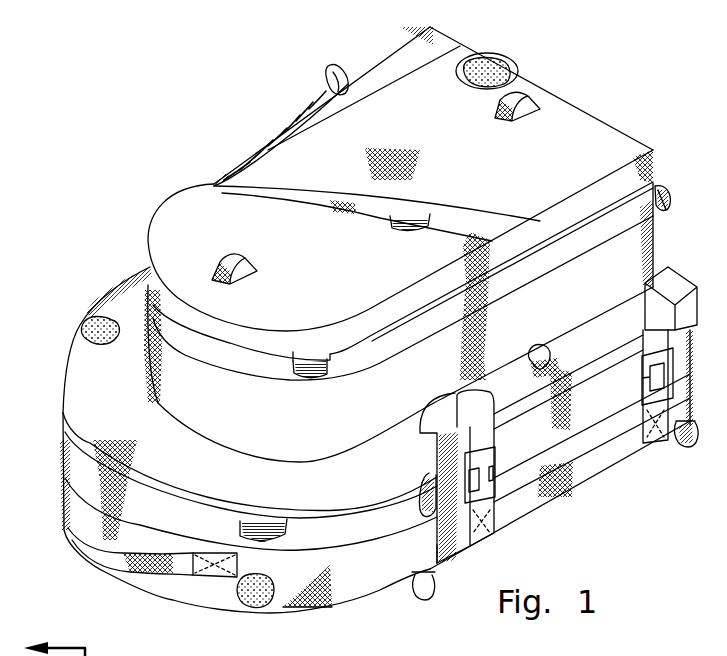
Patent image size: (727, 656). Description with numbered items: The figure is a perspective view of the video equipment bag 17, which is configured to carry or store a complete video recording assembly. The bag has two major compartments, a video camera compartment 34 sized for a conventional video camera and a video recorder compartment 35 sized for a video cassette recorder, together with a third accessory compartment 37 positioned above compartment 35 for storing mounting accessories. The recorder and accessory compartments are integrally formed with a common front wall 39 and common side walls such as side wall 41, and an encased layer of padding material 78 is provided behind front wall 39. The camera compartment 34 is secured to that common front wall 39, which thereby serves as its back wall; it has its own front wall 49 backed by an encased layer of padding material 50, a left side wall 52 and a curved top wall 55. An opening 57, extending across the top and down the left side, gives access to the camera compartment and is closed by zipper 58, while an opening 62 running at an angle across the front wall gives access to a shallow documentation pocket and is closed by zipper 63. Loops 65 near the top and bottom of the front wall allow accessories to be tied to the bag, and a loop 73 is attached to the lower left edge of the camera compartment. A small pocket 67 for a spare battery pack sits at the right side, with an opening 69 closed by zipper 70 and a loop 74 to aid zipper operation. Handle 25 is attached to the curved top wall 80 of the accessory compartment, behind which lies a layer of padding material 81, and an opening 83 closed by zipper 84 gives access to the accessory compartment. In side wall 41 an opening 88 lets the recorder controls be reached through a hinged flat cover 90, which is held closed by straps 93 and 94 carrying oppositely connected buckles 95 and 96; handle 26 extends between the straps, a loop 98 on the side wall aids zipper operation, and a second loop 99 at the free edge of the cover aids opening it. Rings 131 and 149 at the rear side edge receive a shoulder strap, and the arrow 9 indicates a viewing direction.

The section view direction arrow 9 is at (46, 646).
The video equipment bag 17 is at (197, 100).
The handle 25 is at (80, 543).
The handle 26 is at (620, 443).
The video camera compartment 34 is at (168, 221).
The video recorder compartment 35 is at (656, 287).
The accessory compartment 37 is at (378, 578).
The common front wall 39 is at (72, 365).
The side wall 41 is at (423, 552).
The front wall 49 is at (603, 130).
The encased layer of padding material 50 is at (497, 62).
The side wall 52 is at (613, 256).
The curved top wall 55 is at (180, 390).
The opening 57 is at (263, 352).
The zipper 58 is at (315, 360).
The opening 62 is at (373, 222).
The zipper 63 is at (404, 210).
The loops 65 is at (503, 98).
The small pocket 67 is at (368, 68).
The opening 69 is at (272, 127).
The zipper 70 is at (302, 118).
The loop 73 is at (670, 200).
The loop 74 is at (330, 72).
The encased layer of padding material 78 is at (84, 324).
The curved top wall 80 is at (157, 587).
The layer of padding material 81 is at (255, 598).
The opening 83 is at (207, 516).
The zipper 84 is at (275, 520).
The opening 88 is at (528, 511).
The cover 90 is at (573, 437).
The strap 93 is at (492, 431).
The strap 94 is at (645, 340).
The buckle 95 is at (484, 467).
The buckle 96 is at (641, 388).
The loop 98 is at (432, 515).
The second loop 99 is at (556, 343).
The ring 131 is at (683, 450).
The ring 149 is at (426, 596).